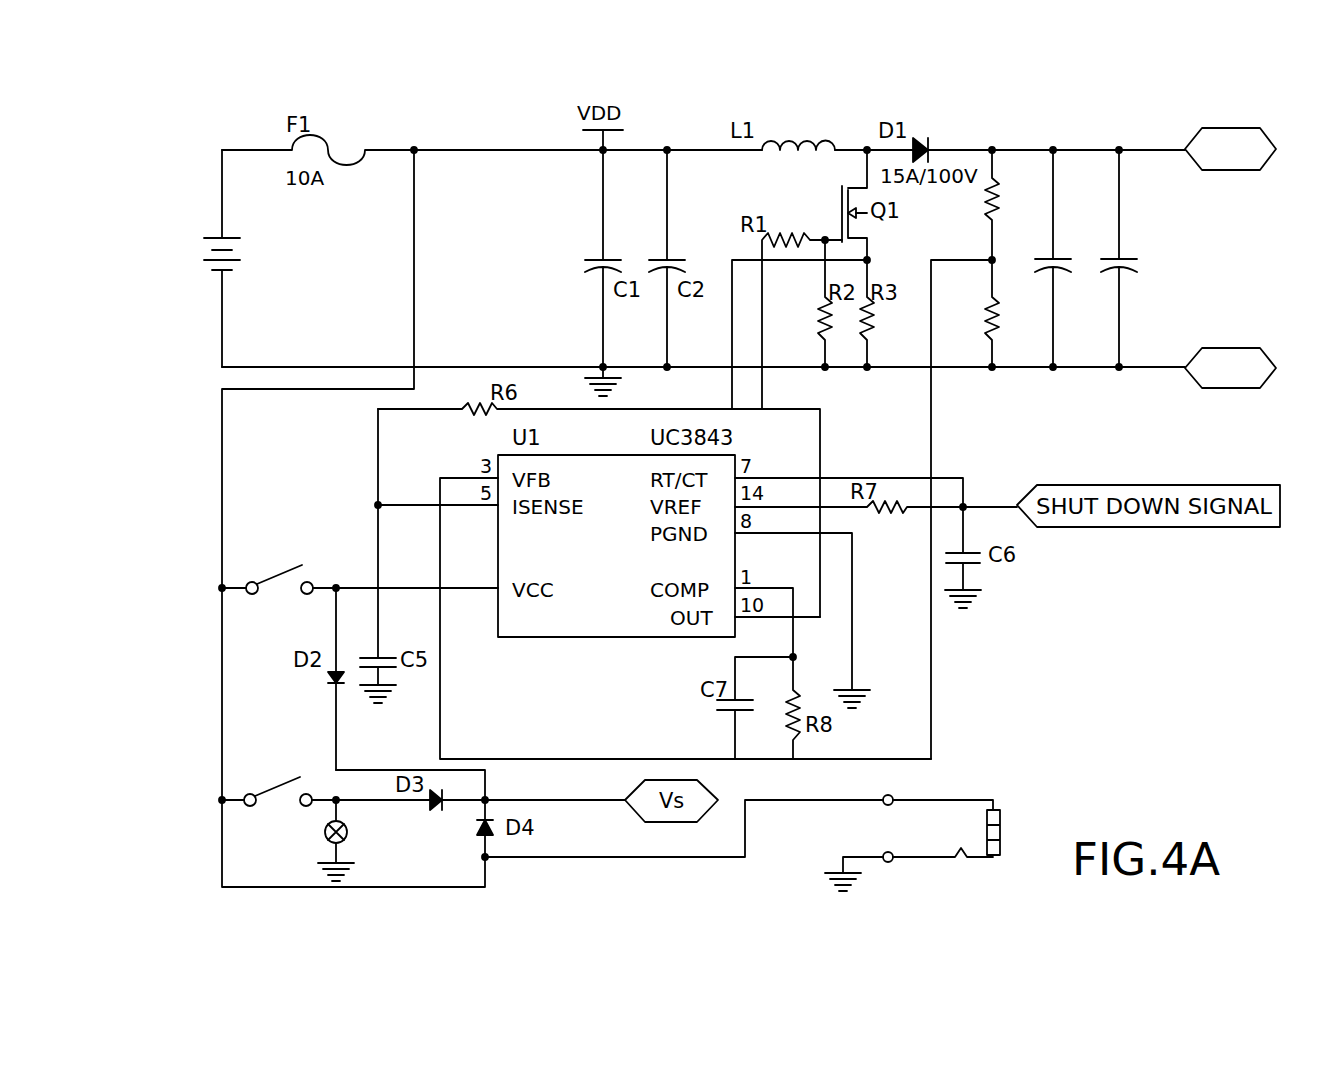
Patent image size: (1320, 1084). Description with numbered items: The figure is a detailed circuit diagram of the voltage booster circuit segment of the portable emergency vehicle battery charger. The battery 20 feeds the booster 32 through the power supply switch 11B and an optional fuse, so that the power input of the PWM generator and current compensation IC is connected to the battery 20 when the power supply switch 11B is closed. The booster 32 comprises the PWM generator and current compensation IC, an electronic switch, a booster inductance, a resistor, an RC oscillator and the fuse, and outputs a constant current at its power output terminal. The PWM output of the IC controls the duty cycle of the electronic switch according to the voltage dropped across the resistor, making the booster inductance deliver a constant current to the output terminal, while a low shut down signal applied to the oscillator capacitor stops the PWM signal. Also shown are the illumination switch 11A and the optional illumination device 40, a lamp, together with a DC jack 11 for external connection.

The battery 20 is at (190, 249).
The booster 32 is at (1037, 130).
The illumination switch 11A is at (280, 776).
The power supply switch 11B is at (282, 573).
The illumination device 40 is at (322, 834).
The DC jack 11 is at (742, 831).